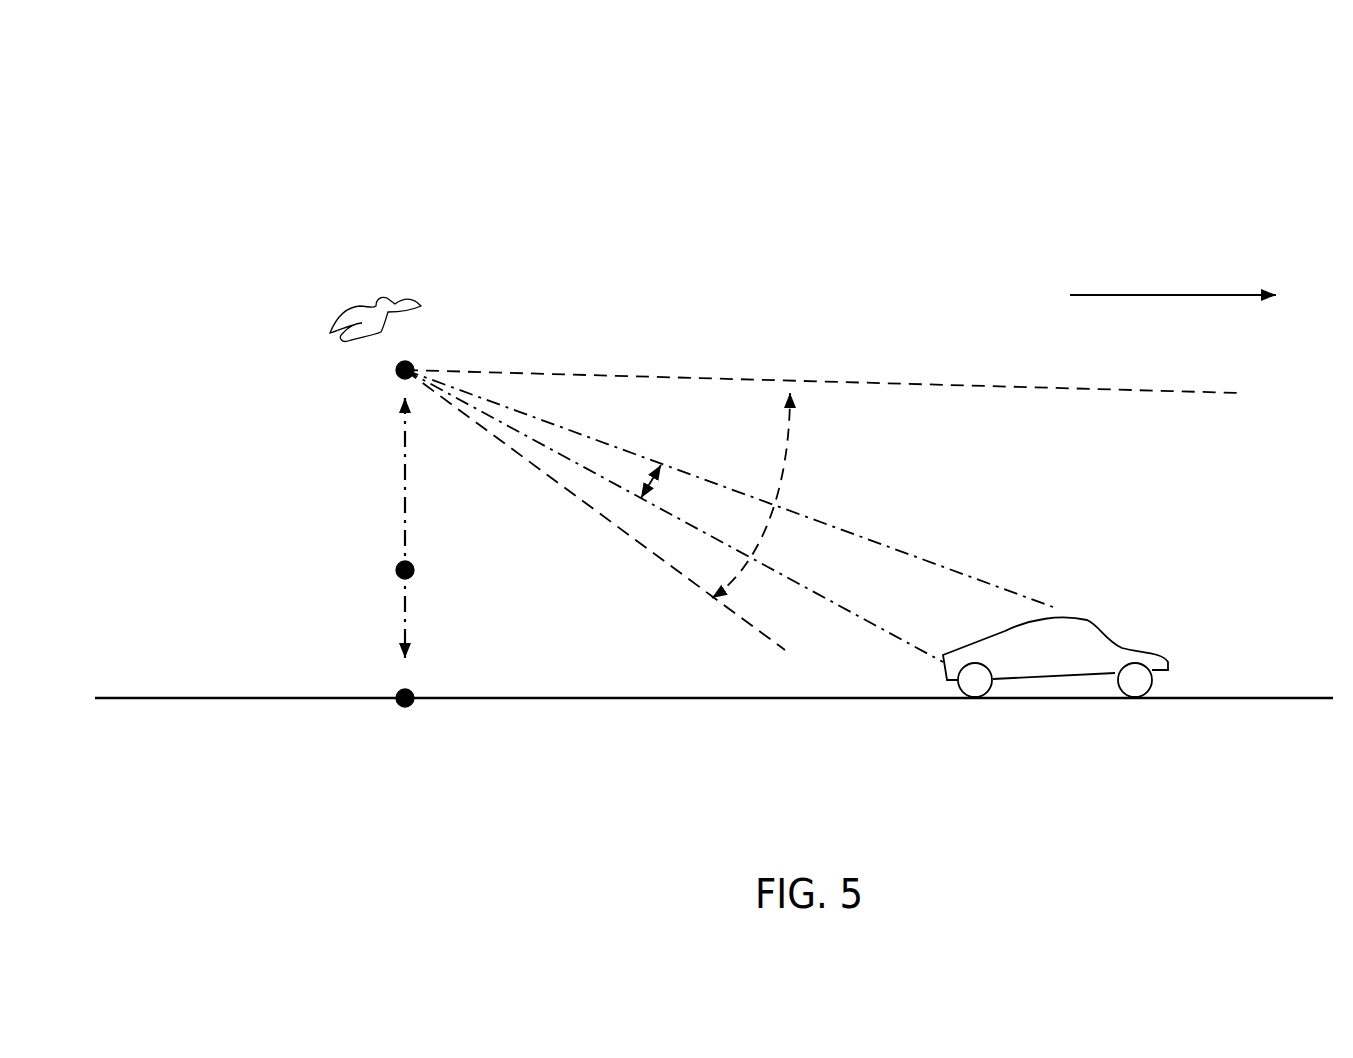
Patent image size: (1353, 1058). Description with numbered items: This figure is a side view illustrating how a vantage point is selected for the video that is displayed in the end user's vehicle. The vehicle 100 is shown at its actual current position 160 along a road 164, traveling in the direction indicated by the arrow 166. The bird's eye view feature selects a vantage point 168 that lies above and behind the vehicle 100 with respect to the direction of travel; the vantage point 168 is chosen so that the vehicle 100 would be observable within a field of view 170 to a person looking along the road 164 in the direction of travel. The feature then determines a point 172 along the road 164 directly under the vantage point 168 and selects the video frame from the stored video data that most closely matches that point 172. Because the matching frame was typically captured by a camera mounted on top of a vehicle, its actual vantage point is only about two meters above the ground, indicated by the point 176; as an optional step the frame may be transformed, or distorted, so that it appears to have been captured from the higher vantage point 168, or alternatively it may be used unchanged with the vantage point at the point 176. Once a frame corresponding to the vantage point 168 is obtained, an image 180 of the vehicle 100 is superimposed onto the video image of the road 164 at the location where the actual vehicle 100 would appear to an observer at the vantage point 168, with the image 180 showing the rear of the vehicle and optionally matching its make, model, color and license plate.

The vehicle 100 is at (1061, 575).
The position 160 is at (1045, 579).
The road 164 is at (1285, 696).
The arrow 166 is at (1232, 304).
The vantage point 168 is at (409, 338).
The field of view 170 is at (784, 458).
The point 172 is at (383, 678).
The point 176 is at (383, 548).
The image of the vehicle 180 is at (645, 477).